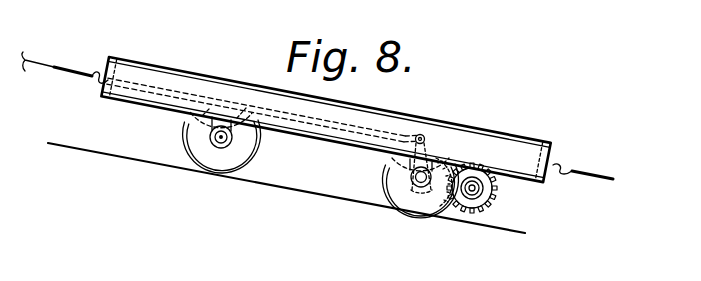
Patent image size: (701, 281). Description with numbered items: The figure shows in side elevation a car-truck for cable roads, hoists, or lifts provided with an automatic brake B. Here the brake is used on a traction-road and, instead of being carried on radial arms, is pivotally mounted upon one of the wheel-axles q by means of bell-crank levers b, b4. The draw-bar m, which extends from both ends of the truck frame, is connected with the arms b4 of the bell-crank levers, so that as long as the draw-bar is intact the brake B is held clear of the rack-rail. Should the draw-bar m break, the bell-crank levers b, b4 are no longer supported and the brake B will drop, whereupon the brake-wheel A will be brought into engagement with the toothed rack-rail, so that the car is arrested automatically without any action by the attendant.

The draw-bar m is at (89, 78).
The wheel-axle q is at (410, 178).
The bell-crank lever arm b4 is at (426, 138).
The bell-crank lever b is at (432, 198).
The brake B is at (475, 208).
The brake-wheel A is at (497, 190).